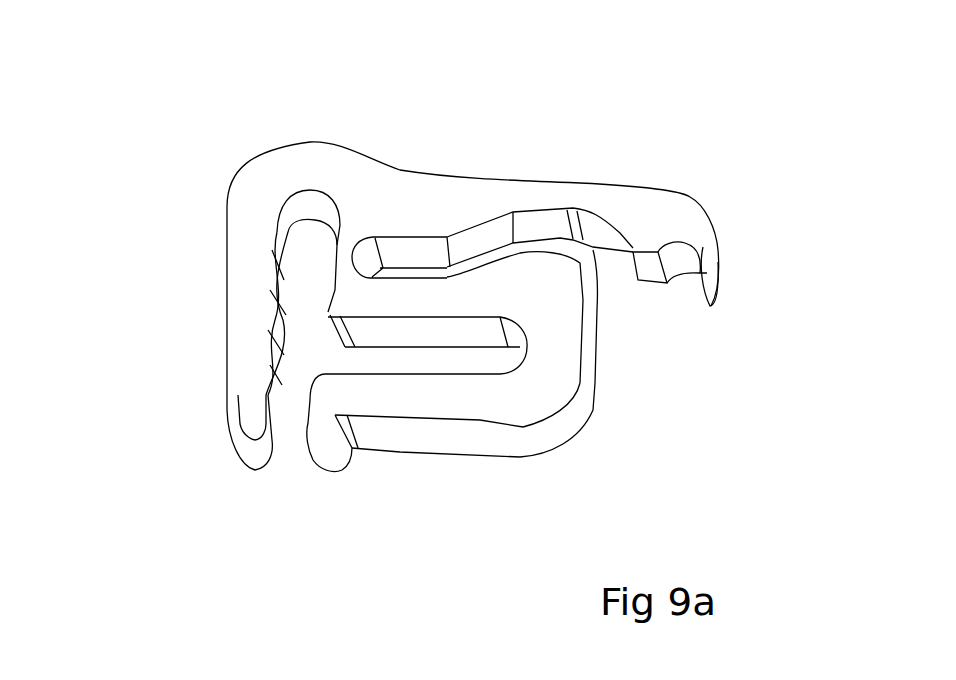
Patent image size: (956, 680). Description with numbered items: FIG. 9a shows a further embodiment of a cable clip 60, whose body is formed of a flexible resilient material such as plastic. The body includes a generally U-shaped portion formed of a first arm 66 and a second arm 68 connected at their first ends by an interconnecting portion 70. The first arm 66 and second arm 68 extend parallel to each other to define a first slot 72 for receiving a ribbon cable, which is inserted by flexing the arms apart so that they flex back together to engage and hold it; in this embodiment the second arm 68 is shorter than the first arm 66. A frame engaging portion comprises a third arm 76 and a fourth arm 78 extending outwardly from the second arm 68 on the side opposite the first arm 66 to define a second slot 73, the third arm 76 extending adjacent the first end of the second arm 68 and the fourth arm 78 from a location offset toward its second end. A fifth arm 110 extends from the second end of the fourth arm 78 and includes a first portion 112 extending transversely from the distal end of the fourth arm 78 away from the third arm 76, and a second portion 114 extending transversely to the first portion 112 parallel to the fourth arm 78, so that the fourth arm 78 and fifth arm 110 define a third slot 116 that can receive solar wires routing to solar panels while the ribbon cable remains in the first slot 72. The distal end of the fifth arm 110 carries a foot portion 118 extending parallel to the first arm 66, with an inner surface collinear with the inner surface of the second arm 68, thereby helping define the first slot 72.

The cable clip 60 is at (757, 175).
The first arm 66 is at (227, 292).
The second arm 68 is at (347, 250).
The interconnecting portion 70 is at (308, 165).
The first slot 72 is at (287, 395).
The second slot 73 is at (593, 255).
The third arm 76 is at (637, 205).
The fourth arm 78 is at (417, 300).
The fifth arm 110 is at (483, 403).
The first portion 112 is at (538, 375).
The second portion 114 is at (395, 397).
The third slot 116 is at (433, 355).
The foot portion 118 is at (333, 418).